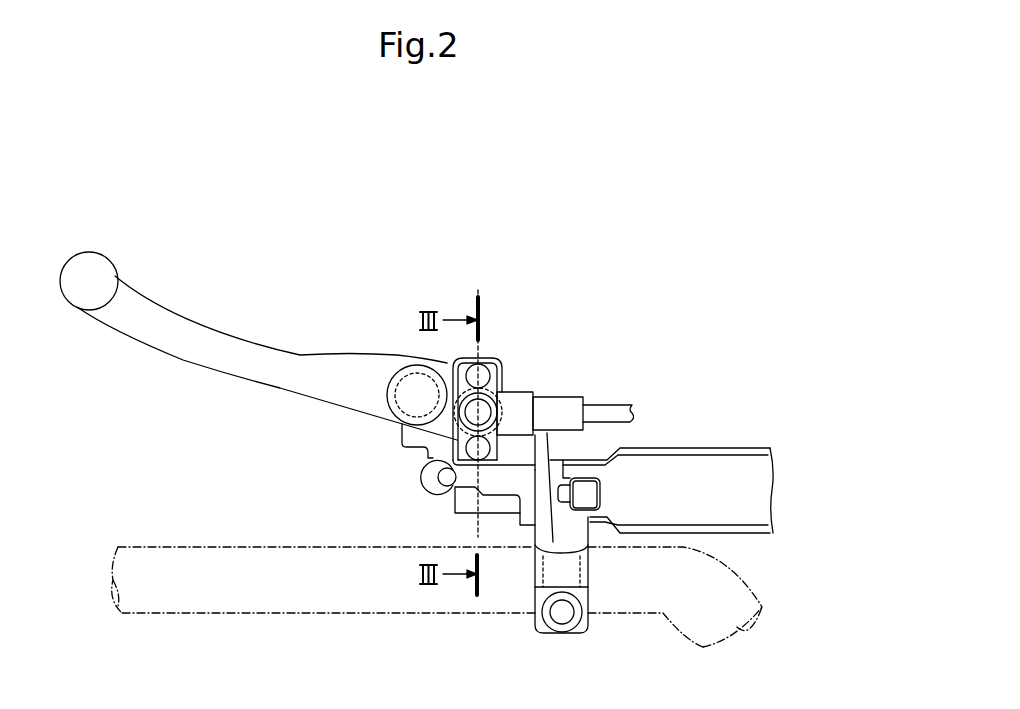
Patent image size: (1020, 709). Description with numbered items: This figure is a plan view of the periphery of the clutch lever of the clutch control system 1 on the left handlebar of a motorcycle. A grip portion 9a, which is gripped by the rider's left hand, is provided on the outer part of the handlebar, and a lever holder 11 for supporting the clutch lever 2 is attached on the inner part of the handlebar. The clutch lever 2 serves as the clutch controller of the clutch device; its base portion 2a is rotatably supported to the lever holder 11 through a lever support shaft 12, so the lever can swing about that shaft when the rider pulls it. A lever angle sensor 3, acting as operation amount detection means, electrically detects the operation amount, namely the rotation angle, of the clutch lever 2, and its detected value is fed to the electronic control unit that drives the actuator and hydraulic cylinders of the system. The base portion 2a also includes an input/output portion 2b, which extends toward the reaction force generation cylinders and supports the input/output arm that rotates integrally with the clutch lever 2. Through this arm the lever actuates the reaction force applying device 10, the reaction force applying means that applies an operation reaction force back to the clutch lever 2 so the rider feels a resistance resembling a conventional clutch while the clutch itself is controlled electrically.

The clutch control system 1 is at (600, 190).
The clutch lever 2 is at (213, 343).
The base portion 2a is at (447, 363).
The input/output portion 2b is at (437, 478).
The lever angle sensor 3 is at (515, 398).
The grip portion 9a is at (205, 555).
The reaction force applying device 10 is at (700, 438).
The lever holder 11 is at (537, 577).
The lever support shaft 12 is at (438, 400).